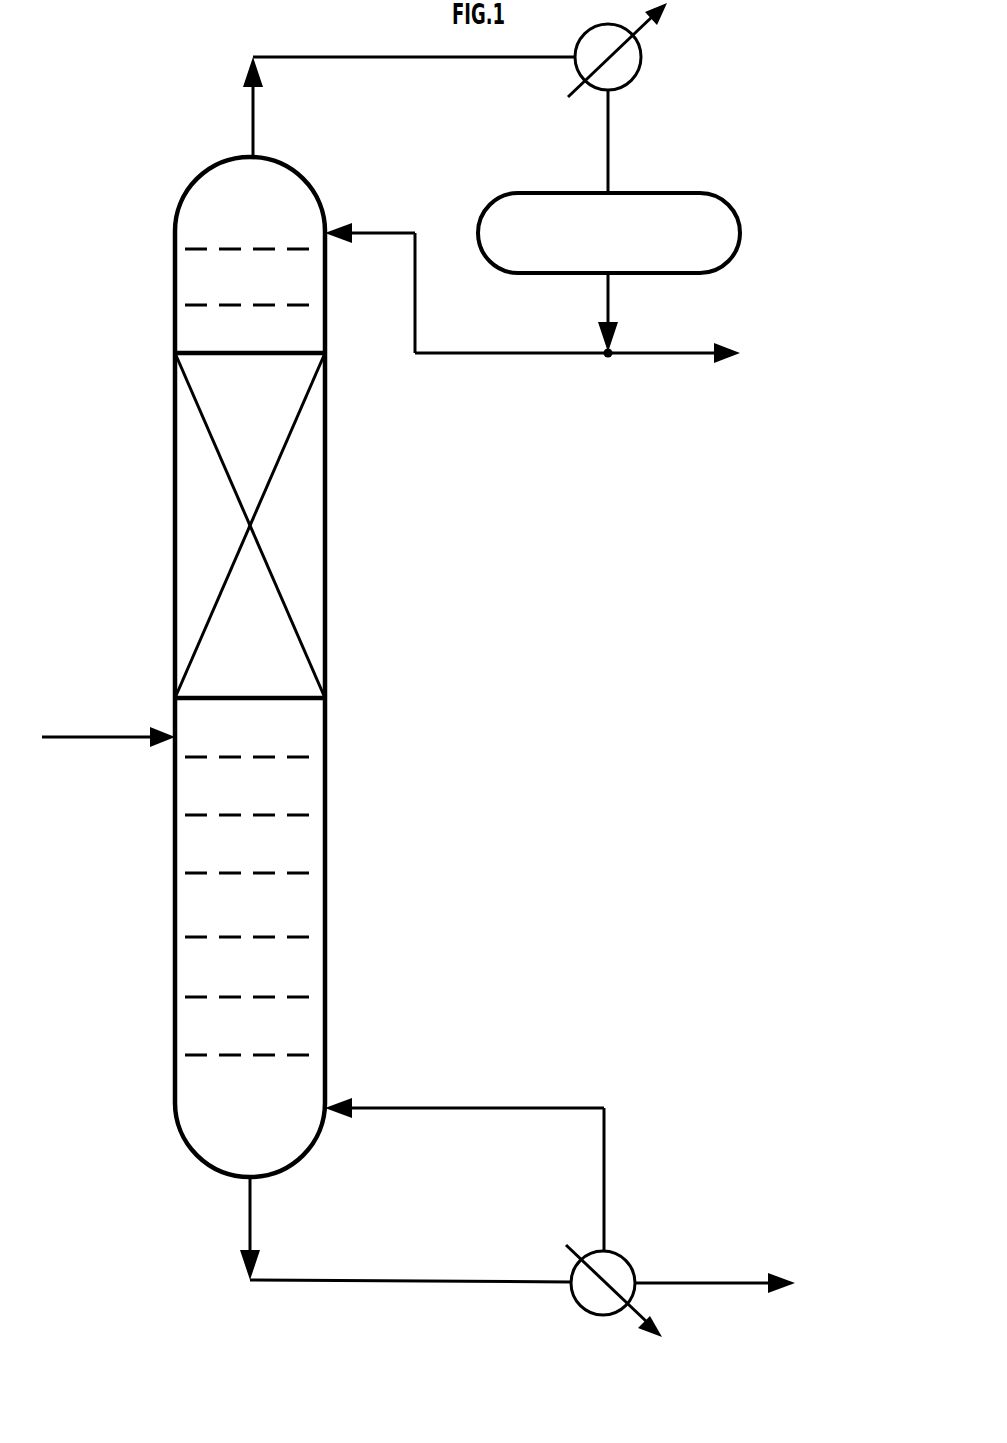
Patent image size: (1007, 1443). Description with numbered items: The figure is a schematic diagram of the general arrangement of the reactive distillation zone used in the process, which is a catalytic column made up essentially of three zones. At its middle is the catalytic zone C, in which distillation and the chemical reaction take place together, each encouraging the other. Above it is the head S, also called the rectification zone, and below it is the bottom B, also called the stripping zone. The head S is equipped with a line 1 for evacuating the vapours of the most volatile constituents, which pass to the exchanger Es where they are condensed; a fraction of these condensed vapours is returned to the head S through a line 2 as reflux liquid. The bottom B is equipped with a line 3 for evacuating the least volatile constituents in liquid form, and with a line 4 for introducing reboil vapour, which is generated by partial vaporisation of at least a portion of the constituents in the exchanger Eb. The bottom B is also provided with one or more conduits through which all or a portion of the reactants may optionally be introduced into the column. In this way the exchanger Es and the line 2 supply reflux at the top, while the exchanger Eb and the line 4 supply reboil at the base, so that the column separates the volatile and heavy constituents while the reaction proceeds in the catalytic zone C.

The line for evacuating vapours 1 is at (392, 57).
The line for introducing reflux liquid 2 is at (390, 231).
The line for evacuating least volatile constituents 3 is at (437, 1280).
The line for introducing reboil vapour 4 is at (447, 1110).
The head S is at (103, 223).
The catalytic zone C is at (390, 353).
The bottom B is at (393, 705).
The exchanger Es is at (641, 62).
The exchanger Eb is at (623, 1257).